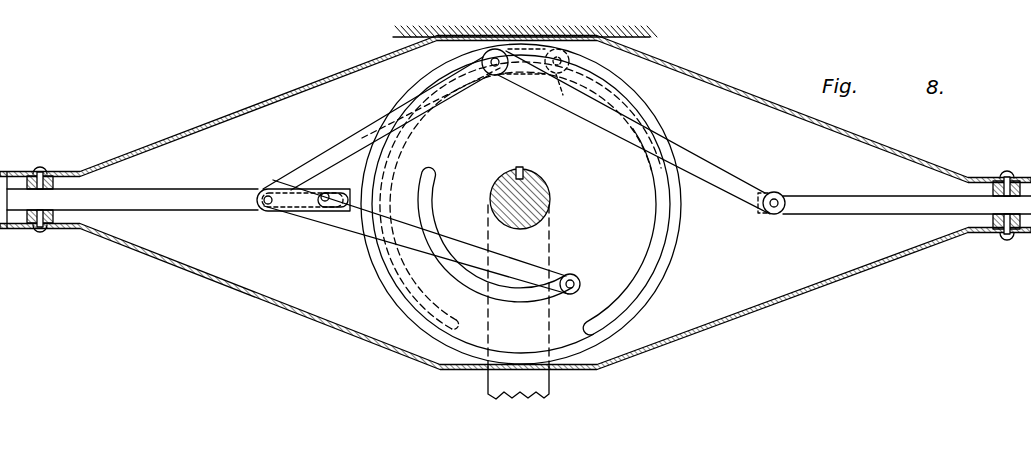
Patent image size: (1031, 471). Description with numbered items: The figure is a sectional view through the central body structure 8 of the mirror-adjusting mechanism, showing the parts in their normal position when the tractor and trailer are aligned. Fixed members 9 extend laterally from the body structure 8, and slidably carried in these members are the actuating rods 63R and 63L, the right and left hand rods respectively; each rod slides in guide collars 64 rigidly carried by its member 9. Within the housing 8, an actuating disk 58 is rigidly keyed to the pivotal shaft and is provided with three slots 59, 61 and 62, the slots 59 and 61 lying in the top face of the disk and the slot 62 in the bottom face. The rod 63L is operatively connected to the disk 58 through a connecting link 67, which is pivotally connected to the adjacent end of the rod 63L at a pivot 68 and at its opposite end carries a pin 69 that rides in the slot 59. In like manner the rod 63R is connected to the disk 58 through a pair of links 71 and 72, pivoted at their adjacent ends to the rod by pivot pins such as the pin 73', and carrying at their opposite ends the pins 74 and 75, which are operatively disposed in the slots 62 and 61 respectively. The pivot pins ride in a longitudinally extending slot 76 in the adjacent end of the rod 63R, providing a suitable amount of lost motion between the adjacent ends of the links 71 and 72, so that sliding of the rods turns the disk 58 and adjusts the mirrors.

The central body structure 8 is at (262, 101).
The fixed members 9 is at (10, 172).
The guide collar 64 is at (56, 176).
The right hand actuating rod 63R is at (136, 190).
The left hand actuating rod 63L is at (873, 199).
The actuating disk 58 is at (668, 267).
The slot 59 is at (669, 191).
The slot 61 is at (428, 195).
The slot 62 is at (424, 308).
The longitudinally extending slot 76 is at (324, 193).
The pivot pin 73' is at (265, 222).
The link 71 is at (340, 152).
The link 72 is at (312, 226).
The pin 69 is at (497, 67).
The connecting link 67 is at (723, 168).
The pin 74 is at (572, 74).
The pivot pin 68 is at (775, 213).
The pin 75 is at (574, 279).